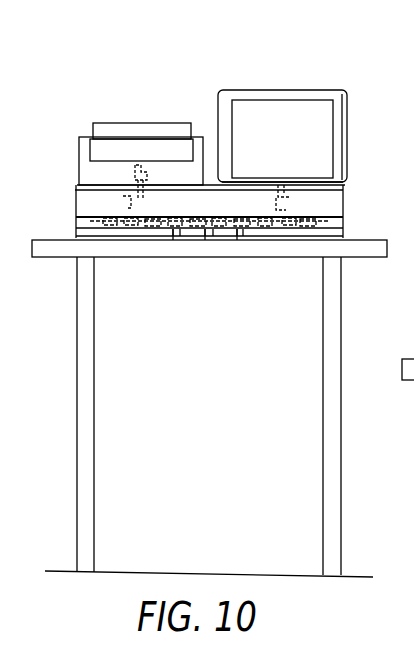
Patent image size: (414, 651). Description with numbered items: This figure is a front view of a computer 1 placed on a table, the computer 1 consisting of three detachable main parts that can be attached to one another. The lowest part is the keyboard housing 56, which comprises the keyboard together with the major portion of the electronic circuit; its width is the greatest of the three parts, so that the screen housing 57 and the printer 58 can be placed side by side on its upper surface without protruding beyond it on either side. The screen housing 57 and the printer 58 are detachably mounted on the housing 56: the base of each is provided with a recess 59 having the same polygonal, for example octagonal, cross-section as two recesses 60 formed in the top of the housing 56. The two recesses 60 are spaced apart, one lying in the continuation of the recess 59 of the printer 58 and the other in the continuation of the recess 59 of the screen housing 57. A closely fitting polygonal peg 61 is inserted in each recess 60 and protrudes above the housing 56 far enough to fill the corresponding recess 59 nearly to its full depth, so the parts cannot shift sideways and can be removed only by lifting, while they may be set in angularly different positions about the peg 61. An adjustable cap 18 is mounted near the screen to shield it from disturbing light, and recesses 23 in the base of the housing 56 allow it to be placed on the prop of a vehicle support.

The computer 1 is at (121, 107).
The adjustable cap 18 is at (350, 117).
The recesses 23 is at (232, 245).
The keyboard housing 56 is at (346, 217).
The screen housing 57 is at (288, 112).
The printer 58 is at (80, 152).
The recess 59 is at (150, 172).
The recesses 60 is at (122, 201).
The peg 61 is at (125, 172).